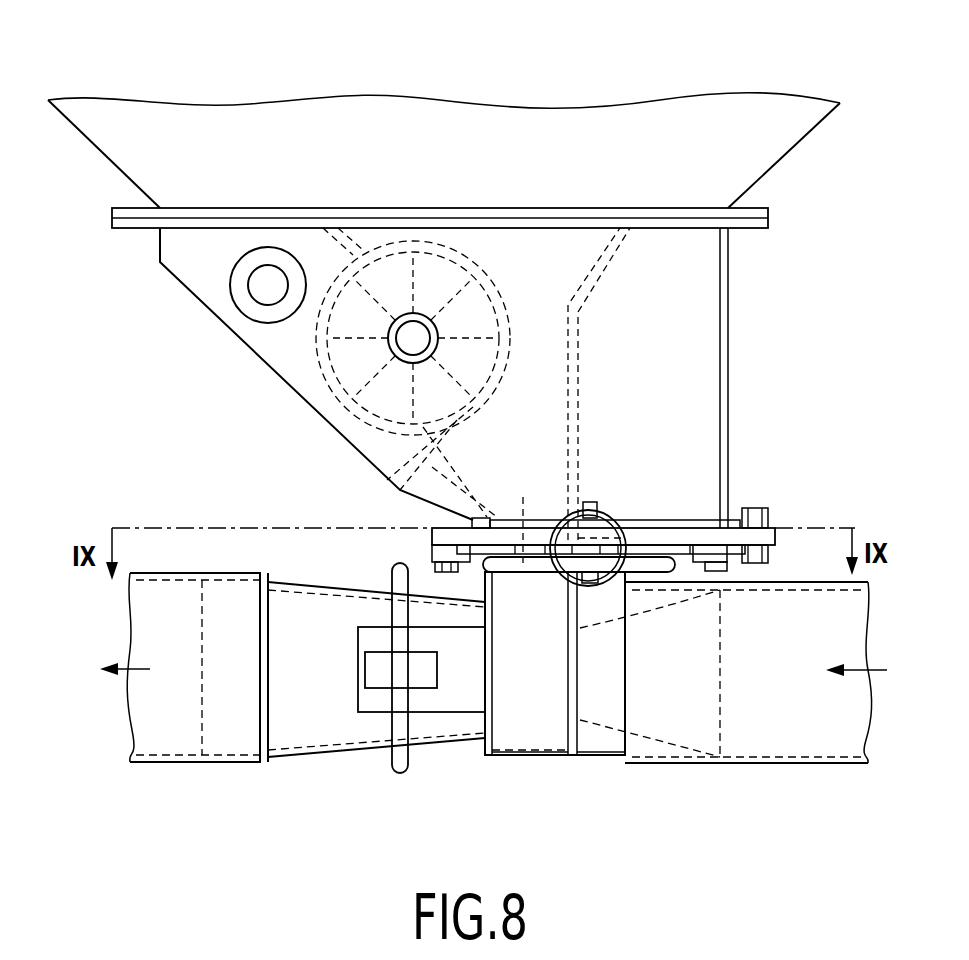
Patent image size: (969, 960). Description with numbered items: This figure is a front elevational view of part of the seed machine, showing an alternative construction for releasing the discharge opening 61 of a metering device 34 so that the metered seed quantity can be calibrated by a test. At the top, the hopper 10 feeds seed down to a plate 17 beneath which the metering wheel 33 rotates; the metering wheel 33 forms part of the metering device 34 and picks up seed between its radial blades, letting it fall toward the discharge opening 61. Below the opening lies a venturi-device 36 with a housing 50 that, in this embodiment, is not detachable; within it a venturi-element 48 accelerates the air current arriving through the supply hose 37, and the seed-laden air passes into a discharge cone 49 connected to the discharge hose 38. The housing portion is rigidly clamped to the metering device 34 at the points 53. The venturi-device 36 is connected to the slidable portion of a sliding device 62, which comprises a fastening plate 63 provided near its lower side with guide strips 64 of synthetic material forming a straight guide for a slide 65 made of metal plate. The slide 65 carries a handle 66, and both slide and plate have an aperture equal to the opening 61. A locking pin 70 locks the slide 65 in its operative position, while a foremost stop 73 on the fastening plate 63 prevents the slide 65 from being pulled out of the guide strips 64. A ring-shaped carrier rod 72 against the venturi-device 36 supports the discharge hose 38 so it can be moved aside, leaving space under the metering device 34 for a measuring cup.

The hopper 10 is at (308, 108).
The mounting plate 17 is at (352, 222).
The metering wheel 33 is at (485, 286).
The metering device 34 is at (742, 319).
The venturi-device 36 is at (498, 809).
The supply hose 37 is at (840, 750).
The discharge hose 38 is at (168, 762).
The venturi-element 48 is at (603, 753).
The discharge cone 49 is at (290, 598).
The housing 50 is at (553, 745).
The points 53 is at (482, 518).
The discharge opening 61 is at (528, 538).
The sliding device 62 is at (762, 466).
The fastening plate 63 is at (772, 532).
The guide strips 64 is at (428, 552).
The slide 65 is at (662, 548).
The handle 66 is at (650, 568).
The locking pin 70 is at (590, 500).
The carrier rod 72 is at (396, 775).
The foremost stop 73 is at (583, 350).